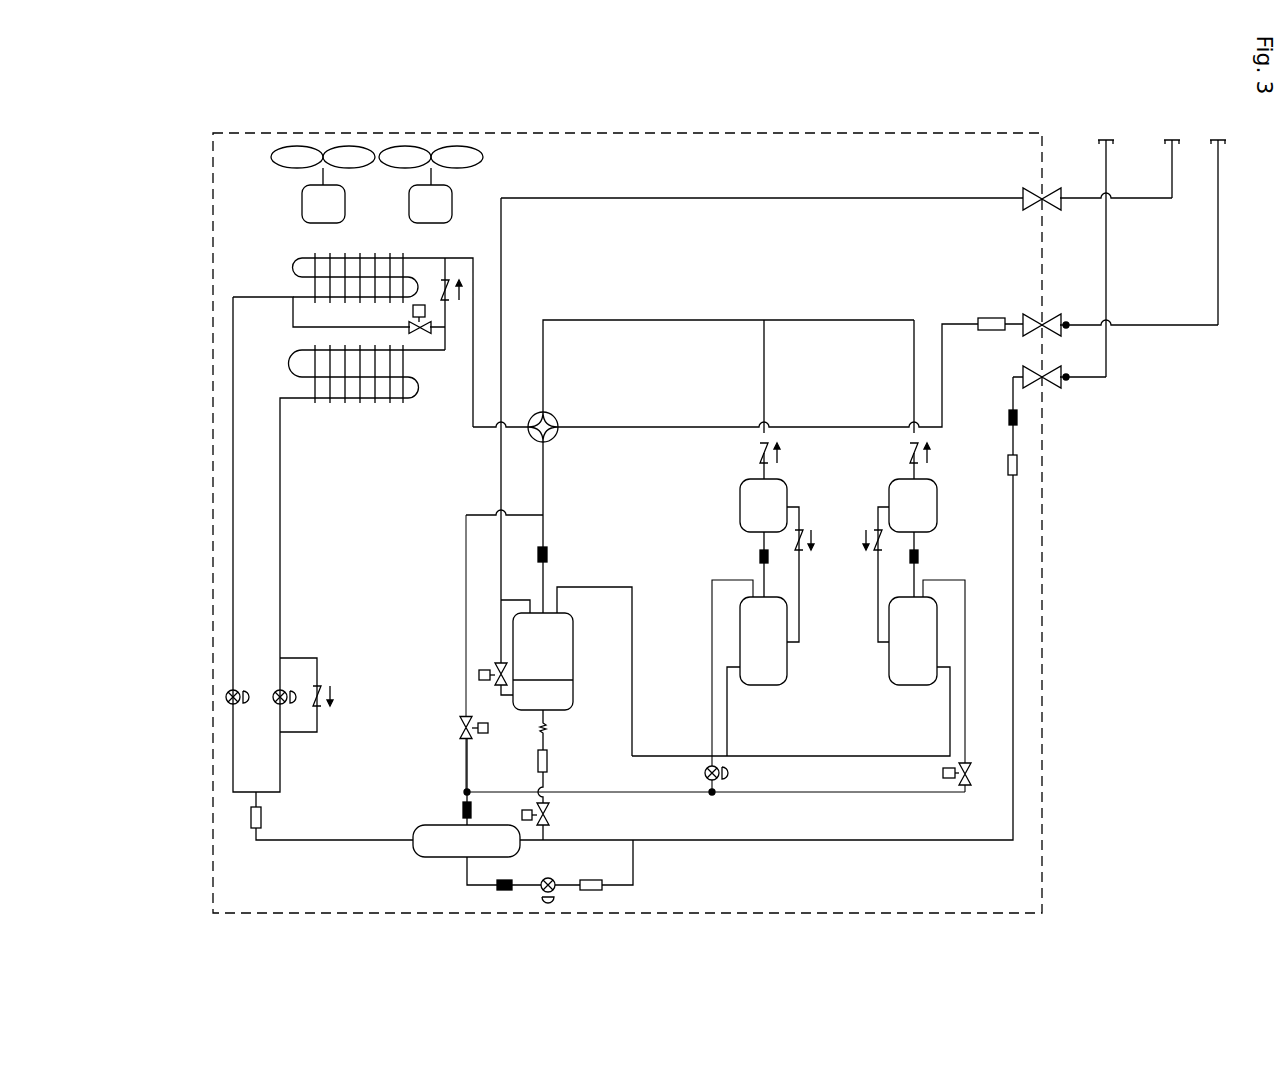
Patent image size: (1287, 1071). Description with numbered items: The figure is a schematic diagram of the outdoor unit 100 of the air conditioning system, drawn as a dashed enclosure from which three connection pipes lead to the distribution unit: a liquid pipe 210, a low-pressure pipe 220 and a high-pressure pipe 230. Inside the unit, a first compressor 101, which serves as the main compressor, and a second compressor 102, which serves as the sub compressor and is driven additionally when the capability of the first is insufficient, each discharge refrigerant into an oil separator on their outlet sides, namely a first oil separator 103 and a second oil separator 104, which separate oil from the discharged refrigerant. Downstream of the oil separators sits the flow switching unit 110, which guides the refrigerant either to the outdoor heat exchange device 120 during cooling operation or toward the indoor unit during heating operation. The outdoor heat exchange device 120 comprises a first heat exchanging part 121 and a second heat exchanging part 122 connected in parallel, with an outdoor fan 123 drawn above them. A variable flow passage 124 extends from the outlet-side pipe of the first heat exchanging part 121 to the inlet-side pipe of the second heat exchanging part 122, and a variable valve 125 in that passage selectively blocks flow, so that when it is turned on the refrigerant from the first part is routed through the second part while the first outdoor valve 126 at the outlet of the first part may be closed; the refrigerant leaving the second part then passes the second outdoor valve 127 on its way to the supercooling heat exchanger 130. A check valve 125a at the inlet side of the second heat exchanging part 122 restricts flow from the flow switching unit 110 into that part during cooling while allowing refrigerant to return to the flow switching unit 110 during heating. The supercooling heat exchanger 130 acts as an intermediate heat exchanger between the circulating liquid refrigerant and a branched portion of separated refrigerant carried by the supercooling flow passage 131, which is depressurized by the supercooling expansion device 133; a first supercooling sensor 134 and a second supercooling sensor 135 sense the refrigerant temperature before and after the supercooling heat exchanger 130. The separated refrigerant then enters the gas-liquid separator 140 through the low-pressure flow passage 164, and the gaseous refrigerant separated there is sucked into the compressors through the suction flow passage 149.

The outdoor unit 100 is at (912, 122).
The outdoor heat exchange device 120 is at (260, 178).
The first heat exchanging part 121 is at (308, 257).
The second heat exchanging part 122 is at (308, 350).
The outdoor fan 123 is at (347, 145).
The variable flow passage 124 is at (292, 312).
The variable valve 125 is at (420, 303).
The check valve 125a is at (447, 283).
The first outdoor valve 126 is at (225, 697).
The second outdoor valve 127 is at (278, 690).
The flow switching unit 110 is at (557, 438).
The low-pressure flow passage 164 is at (545, 530).
The gas-liquid separator 140 is at (567, 662).
The second oil separator 104 is at (740, 497).
The second compressor 102 is at (740, 660).
The first oil separator 103 is at (937, 513).
The first compressor 101 is at (937, 654).
The suction flow passage 149 is at (712, 715).
The second supercooling sensor 135 is at (462, 810).
The supercooling heat exchanger 130 is at (437, 857).
The first supercooling sensor 134 is at (502, 890).
The supercooling expansion device 133 is at (557, 892).
The supercooling flow passage 131 is at (613, 890).
The liquid pipe 210 is at (1106, 163).
The low-pressure pipe 220 is at (1172, 163).
The high-pressure pipe 230 is at (1218, 163).